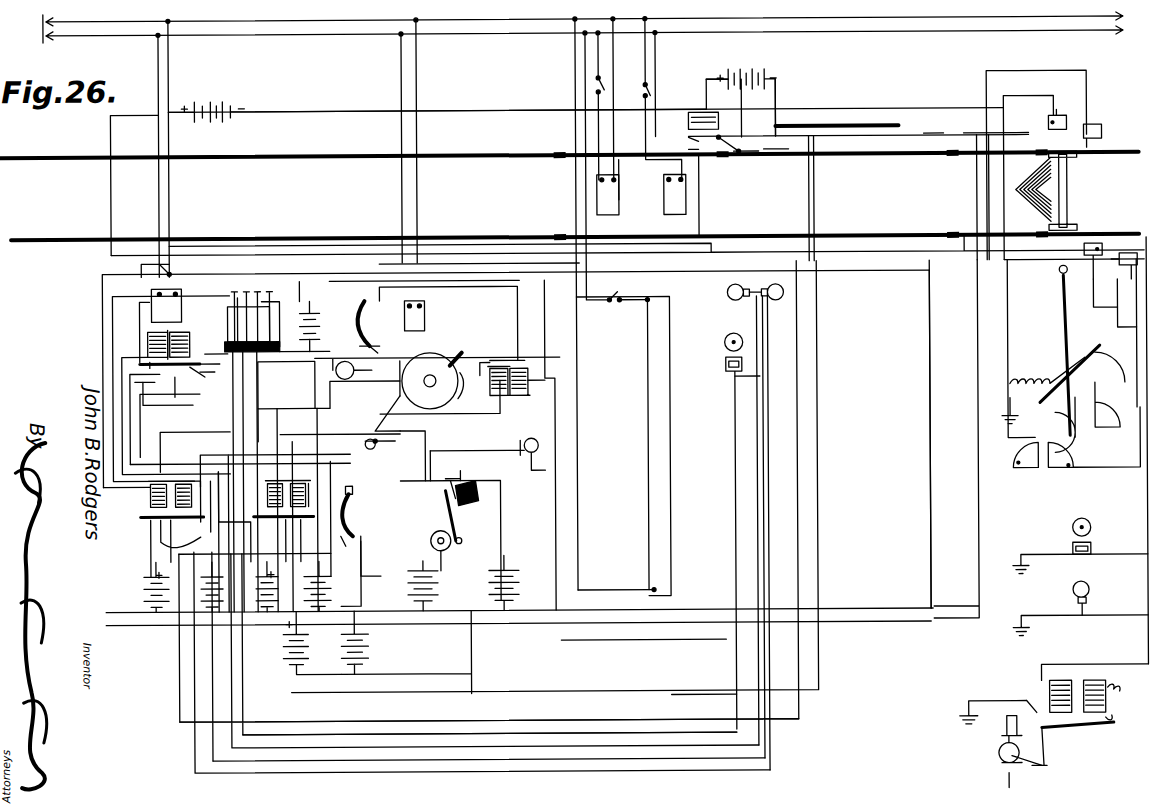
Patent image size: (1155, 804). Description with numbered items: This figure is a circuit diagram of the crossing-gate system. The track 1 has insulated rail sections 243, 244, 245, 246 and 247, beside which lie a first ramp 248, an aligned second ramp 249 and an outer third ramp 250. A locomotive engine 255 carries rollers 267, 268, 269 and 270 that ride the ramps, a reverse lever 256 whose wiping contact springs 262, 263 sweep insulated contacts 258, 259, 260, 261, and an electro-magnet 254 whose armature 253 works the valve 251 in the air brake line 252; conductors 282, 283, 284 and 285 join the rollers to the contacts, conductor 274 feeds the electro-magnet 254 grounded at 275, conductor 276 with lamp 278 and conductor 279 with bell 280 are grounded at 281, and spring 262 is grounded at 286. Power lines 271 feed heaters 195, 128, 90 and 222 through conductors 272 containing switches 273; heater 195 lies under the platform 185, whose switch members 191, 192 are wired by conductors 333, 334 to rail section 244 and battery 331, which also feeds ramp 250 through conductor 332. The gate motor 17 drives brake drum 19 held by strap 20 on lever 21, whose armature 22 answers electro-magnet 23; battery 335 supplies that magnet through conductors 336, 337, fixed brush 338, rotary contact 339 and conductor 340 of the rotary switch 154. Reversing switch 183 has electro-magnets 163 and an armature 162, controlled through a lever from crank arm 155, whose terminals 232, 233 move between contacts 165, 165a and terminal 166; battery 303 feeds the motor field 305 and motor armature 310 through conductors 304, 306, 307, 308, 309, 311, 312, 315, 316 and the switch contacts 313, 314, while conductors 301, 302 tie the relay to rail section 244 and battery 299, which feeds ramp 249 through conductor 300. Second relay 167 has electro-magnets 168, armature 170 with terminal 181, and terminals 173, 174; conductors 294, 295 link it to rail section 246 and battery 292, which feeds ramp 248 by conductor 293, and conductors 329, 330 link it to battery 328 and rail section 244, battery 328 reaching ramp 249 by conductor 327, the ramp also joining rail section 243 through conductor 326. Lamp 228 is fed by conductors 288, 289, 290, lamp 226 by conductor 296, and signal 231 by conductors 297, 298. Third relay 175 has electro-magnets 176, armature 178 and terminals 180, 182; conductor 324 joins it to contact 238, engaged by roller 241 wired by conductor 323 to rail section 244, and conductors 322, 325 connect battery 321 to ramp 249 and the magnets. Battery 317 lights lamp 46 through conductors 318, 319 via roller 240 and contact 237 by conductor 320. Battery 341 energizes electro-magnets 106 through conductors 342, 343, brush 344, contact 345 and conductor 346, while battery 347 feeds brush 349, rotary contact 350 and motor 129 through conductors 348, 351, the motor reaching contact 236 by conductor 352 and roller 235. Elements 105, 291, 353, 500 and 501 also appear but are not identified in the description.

The line wires 1 is at (38, 227).
The contact 17 is at (378, 425).
The wheel 19 is at (440, 535).
The wheel 20 is at (438, 525).
The arm 21 is at (460, 526).
The wire 22 is at (442, 466).
The magnet 23 is at (478, 502).
The lamp 46 is at (532, 442).
The contact box 90 is at (414, 316).
The magnet coil 105 is at (502, 369).
The magnet coil 106 is at (514, 391).
The contact box 128 is at (177, 300).
The motor 129 is at (437, 359).
The plunger 154 is at (268, 313).
The contact 155 is at (203, 353).
The contact 162 is at (161, 369).
The relay coil 163 is at (165, 333).
The relay coil 165 is at (148, 335).
The contact 165a is at (130, 375).
The contact 166 is at (203, 363).
The wire 167 is at (143, 467).
The relay coil 168 is at (182, 492).
The relay coil 170 is at (142, 495).
The wire 173 is at (219, 505).
The wire 174 is at (161, 548).
The relay coil 175 is at (287, 487).
The relay coil 176 is at (311, 495).
The wire 178 is at (300, 540).
The wire 180 is at (234, 517).
The armature 181 is at (179, 539).
The armature 182 is at (262, 520).
The core 183 is at (172, 334).
The relay 185 is at (672, 110).
The contact 191 is at (678, 145).
The contact 192 is at (690, 132).
The relay boxes 195 is at (665, 200).
The wire 222 is at (648, 432).
The red lamp 226 is at (723, 295).
The green lamp 228 is at (783, 288).
The bell 231 is at (720, 357).
The armature 232 is at (143, 360).
The contact 233 is at (212, 375).
The contact 235 is at (469, 389).
The disc 236 is at (446, 355).
The contact 237 is at (341, 545).
The contact 238 is at (364, 338).
The contact segment 240 is at (355, 505).
The contact segment 241 is at (360, 305).
The wire 243 is at (620, 150).
The wire 244 is at (750, 234).
The wire 245 is at (985, 160).
The wire 246 is at (1025, 238).
The wire 247 is at (856, 158).
The wire 248 is at (1027, 137).
The conductor 249 is at (925, 135).
The conductor 250 is at (850, 125).
The pivot 251 is at (1000, 760).
The lever 252 is at (1003, 725).
The armature 253 is at (1078, 735).
The magnet 254 is at (1108, 695).
The coil 255 is at (1052, 190).
The lever 256 is at (1062, 305).
The segment 258 is at (1022, 470).
The segment 259 is at (1055, 480).
The segment 260 is at (1082, 440).
The segment 261 is at (1110, 420).
The spring 262 is at (1035, 388).
The bar 263 is at (1098, 342).
The contact 267 is at (1064, 114).
The contact 268 is at (1104, 130).
The contact 269 is at (1085, 252).
The contact 270 is at (1126, 257).
The line wires 271 is at (323, 14).
The wire 272 is at (164, 188).
The switch 273 is at (600, 88).
The wire 274 is at (1130, 660).
The ground 275 is at (960, 712).
The wire 276 is at (1106, 622).
The bell 278 is at (1090, 590).
The wire 279 is at (1111, 548).
The bell 280 is at (1072, 530).
The ground 281 is at (1018, 556).
The wire 282 is at (1125, 300).
The wire 283 is at (1100, 300).
The wire 284 is at (1030, 98).
The wire 285 is at (1073, 72).
The ground 286 is at (1005, 419).
The wire 288 is at (763, 445).
The wire 289 is at (763, 492).
The wire 290 is at (205, 570).
The battery 291 is at (255, 575).
The battery 292 is at (150, 578).
The wire 293 is at (976, 548).
The wire 294 is at (365, 262).
The wire 295 is at (170, 561).
The wire 296 is at (749, 438).
The wire 297 is at (752, 383).
The wire 298 is at (730, 482).
The battery 299 is at (266, 610).
The wire 300 is at (924, 440).
The wire 301 is at (883, 246).
The wire 302 is at (168, 402).
The battery 303 is at (323, 585).
The wire 304 is at (373, 556).
The wire 305 is at (390, 450).
The wire 306 is at (138, 458).
The wire 307 is at (120, 368).
The wire 308 is at (288, 497).
The wire 309 is at (195, 430).
The contact 310 is at (354, 442).
The wire 311 is at (135, 391).
The wire 312 is at (161, 387).
The wire 313 is at (286, 384).
The plunger 314 is at (270, 288).
The wire 315 is at (172, 328).
The wire 316 is at (322, 383).
The battery 317 is at (340, 668).
The wire 318 is at (491, 686).
The wire 319 is at (456, 445).
The wire 320 is at (350, 602).
The battery 321 is at (290, 670).
The wire 322 is at (822, 541).
The wire 323 is at (701, 248).
The wire 324 is at (359, 378).
The wire 325 is at (325, 545).
The switch 326 is at (716, 134).
The wire 327 is at (545, 104).
The battery 328 is at (216, 97).
The wire 329 is at (112, 128).
The wire 330 is at (178, 658).
The battery 331 is at (752, 68).
The wire 332 is at (780, 102).
The wire 333 is at (708, 181).
The wire 334 is at (708, 78).
The battery 335 is at (428, 612).
The battery 336 is at (465, 566).
The wire 337 is at (490, 472).
The solenoid 338 is at (234, 323).
The solenoid base 339 is at (241, 465).
The wire 340 is at (370, 438).
The wire 341 is at (512, 566).
The wire 342 is at (562, 533).
The wire 343 is at (493, 289).
The plunger 344 is at (247, 288).
The plunger 345 is at (235, 292).
The wire 346 is at (410, 418).
The wire 347 is at (404, 276).
The battery 348 is at (304, 315).
The plunger 349 is at (260, 288).
The wire 350 is at (275, 350).
The wire 351 is at (330, 355).
The wire 352 is at (362, 345).
The contact arm 353 is at (432, 348).
The contact 500 is at (480, 358).
The wire 501 is at (495, 358).